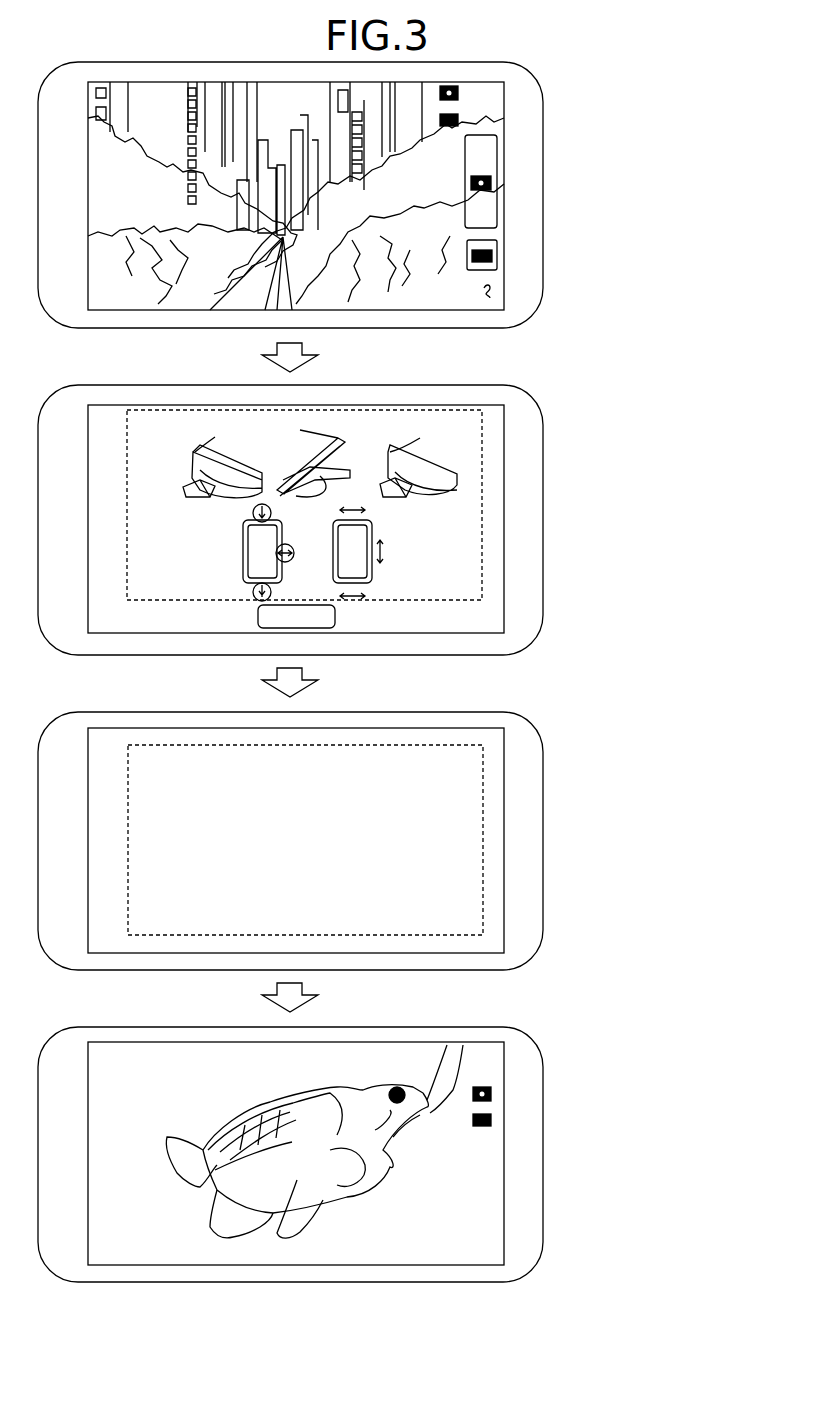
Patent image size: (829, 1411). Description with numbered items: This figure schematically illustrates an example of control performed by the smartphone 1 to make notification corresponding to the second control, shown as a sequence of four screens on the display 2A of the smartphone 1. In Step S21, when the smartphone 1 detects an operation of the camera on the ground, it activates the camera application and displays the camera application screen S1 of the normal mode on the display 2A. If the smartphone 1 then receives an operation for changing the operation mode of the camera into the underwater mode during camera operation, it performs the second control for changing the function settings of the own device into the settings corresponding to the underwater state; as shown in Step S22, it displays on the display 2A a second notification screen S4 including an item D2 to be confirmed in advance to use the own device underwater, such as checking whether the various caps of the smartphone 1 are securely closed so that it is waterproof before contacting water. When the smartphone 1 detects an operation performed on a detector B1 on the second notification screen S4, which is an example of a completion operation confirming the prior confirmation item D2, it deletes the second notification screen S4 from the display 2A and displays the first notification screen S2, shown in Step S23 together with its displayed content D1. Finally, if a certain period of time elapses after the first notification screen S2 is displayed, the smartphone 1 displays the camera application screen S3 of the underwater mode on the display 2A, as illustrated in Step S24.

The smartphone 1 is at (543, 278).
The display 2A is at (504, 100).
The camera application screen of the normal mode S1 is at (498, 232).
The first notification screen S2 is at (360, 840).
The camera application screen of the underwater mode S3 is at (496, 1160).
The second notification screen S4 is at (362, 548).
The welcome dialog D1 is at (483, 878).
The item to be confirmed in advance D2 is at (482, 562).
The detector B1 is at (335, 615).
The Step S21 is at (633, 146).
The Step S22 is at (633, 474).
The Step S23 is at (633, 788).
The Step S24 is at (633, 1112).